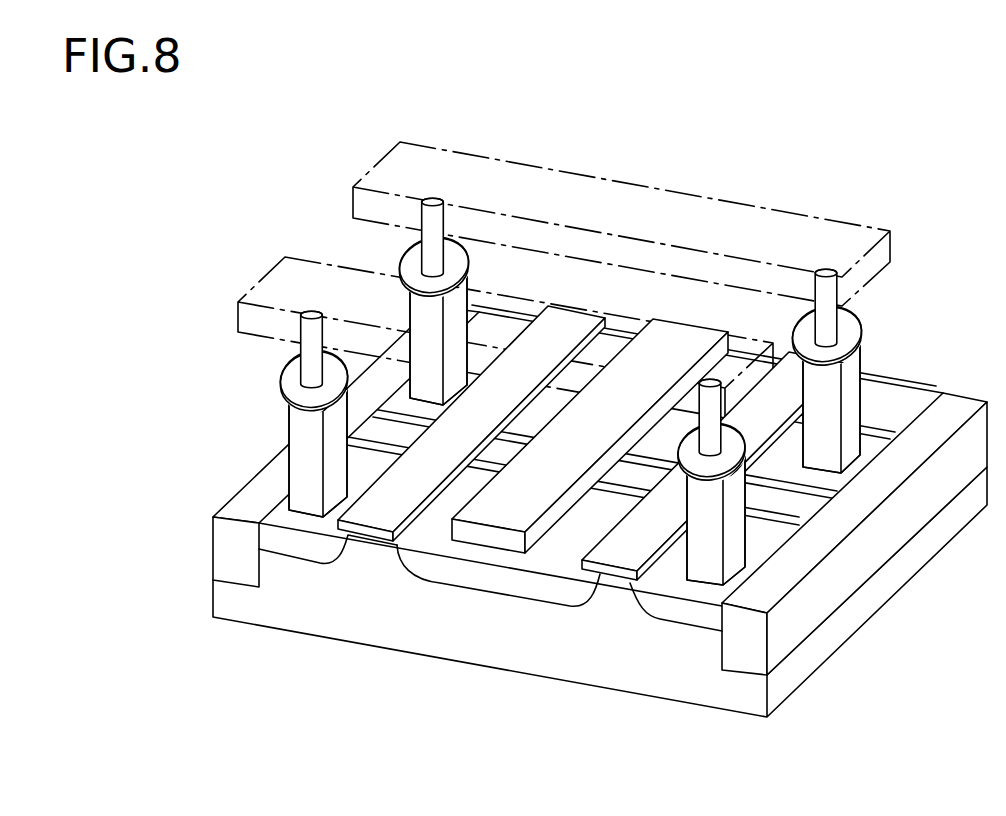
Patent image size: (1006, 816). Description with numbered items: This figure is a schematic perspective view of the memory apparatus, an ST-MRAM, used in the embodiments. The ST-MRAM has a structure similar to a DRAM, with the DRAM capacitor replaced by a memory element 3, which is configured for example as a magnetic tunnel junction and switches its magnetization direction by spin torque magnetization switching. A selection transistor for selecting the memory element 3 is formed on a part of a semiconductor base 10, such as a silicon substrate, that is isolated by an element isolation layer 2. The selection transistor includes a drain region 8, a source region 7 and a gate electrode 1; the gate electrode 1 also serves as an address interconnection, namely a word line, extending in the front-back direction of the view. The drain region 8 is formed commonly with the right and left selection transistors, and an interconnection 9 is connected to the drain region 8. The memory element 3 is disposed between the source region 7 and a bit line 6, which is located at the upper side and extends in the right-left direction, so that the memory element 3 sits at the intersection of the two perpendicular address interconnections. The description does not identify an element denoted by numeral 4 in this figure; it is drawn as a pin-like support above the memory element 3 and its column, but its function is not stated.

The gate electrode 1 is at (370, 513).
The element isolation layer 2 is at (237, 562).
The memory element 3 is at (293, 395).
The support pin 4 is at (310, 367).
The bit line 6 is at (300, 270).
The source region 7 is at (293, 543).
The drain region 8 is at (437, 572).
The interconnection 9 is at (490, 512).
The semiconductor base 10 is at (473, 647).